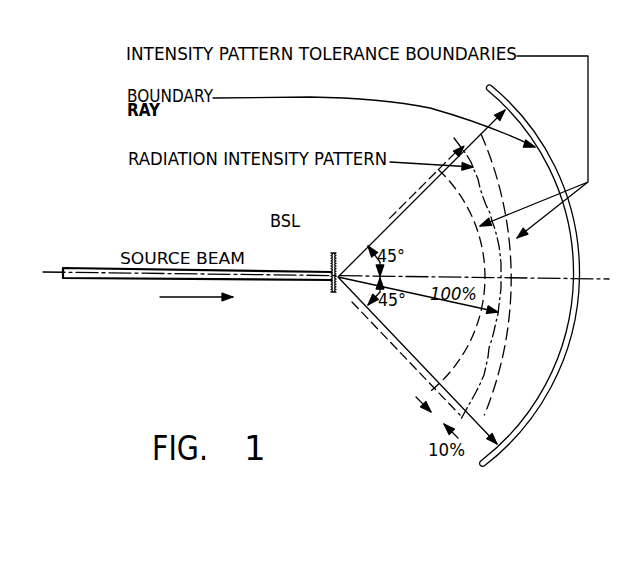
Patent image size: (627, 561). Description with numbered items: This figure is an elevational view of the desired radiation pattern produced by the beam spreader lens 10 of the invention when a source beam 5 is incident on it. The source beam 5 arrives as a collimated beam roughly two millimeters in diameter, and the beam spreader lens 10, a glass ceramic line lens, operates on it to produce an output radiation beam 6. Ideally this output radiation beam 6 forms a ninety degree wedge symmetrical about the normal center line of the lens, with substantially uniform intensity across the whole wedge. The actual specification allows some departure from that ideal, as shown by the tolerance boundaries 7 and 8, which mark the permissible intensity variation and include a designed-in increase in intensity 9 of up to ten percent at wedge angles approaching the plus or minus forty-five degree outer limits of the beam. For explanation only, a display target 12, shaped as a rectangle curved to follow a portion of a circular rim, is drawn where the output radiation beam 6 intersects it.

The source beam 5 is at (243, 280).
The beam spreader lens 10 is at (334, 294).
The output radiation beam 6 is at (398, 350).
The tolerance boundary 7 is at (495, 377).
The tolerance boundary 8 is at (462, 352).
The increase in intensity 9 is at (469, 399).
The display target 12 is at (522, 433).